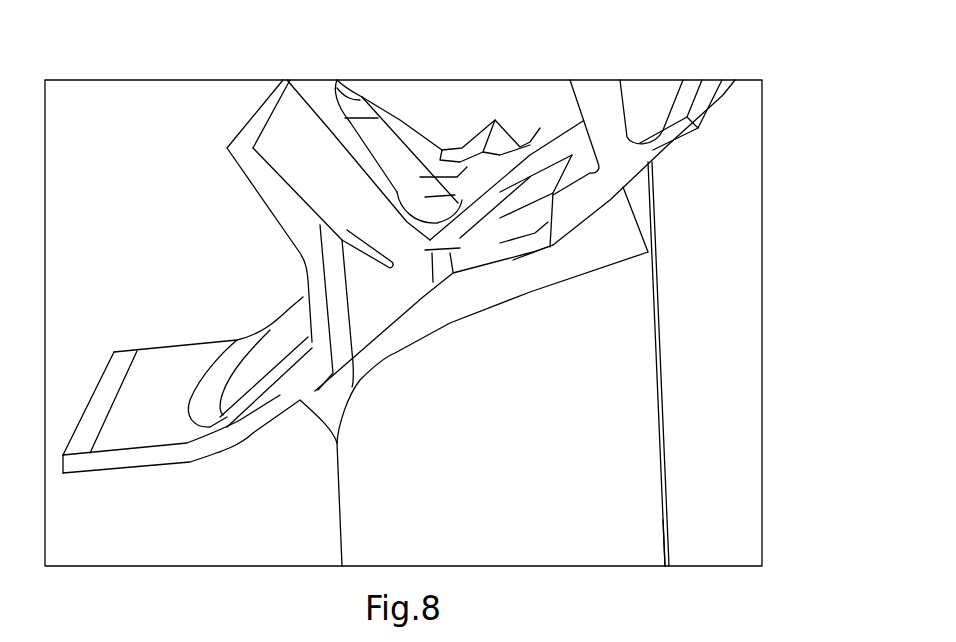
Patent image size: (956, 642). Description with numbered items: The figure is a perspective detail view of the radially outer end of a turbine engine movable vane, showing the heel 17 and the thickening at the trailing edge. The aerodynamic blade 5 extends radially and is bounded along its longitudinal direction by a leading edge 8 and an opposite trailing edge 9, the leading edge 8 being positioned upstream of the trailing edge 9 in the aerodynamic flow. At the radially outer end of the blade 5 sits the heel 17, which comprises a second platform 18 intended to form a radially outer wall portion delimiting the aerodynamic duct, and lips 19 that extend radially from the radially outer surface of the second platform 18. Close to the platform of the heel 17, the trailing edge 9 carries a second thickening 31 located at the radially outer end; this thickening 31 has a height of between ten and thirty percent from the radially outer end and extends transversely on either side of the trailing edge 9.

The heel 17 is at (248, 257).
The lips 19 is at (633, 90).
The second platform 18 is at (700, 125).
The second thickening 31 is at (647, 193).
The aerodynamic blade 5 is at (640, 385).
The leading edge 8 is at (337, 523).
The trailing edge 9 is at (672, 545).